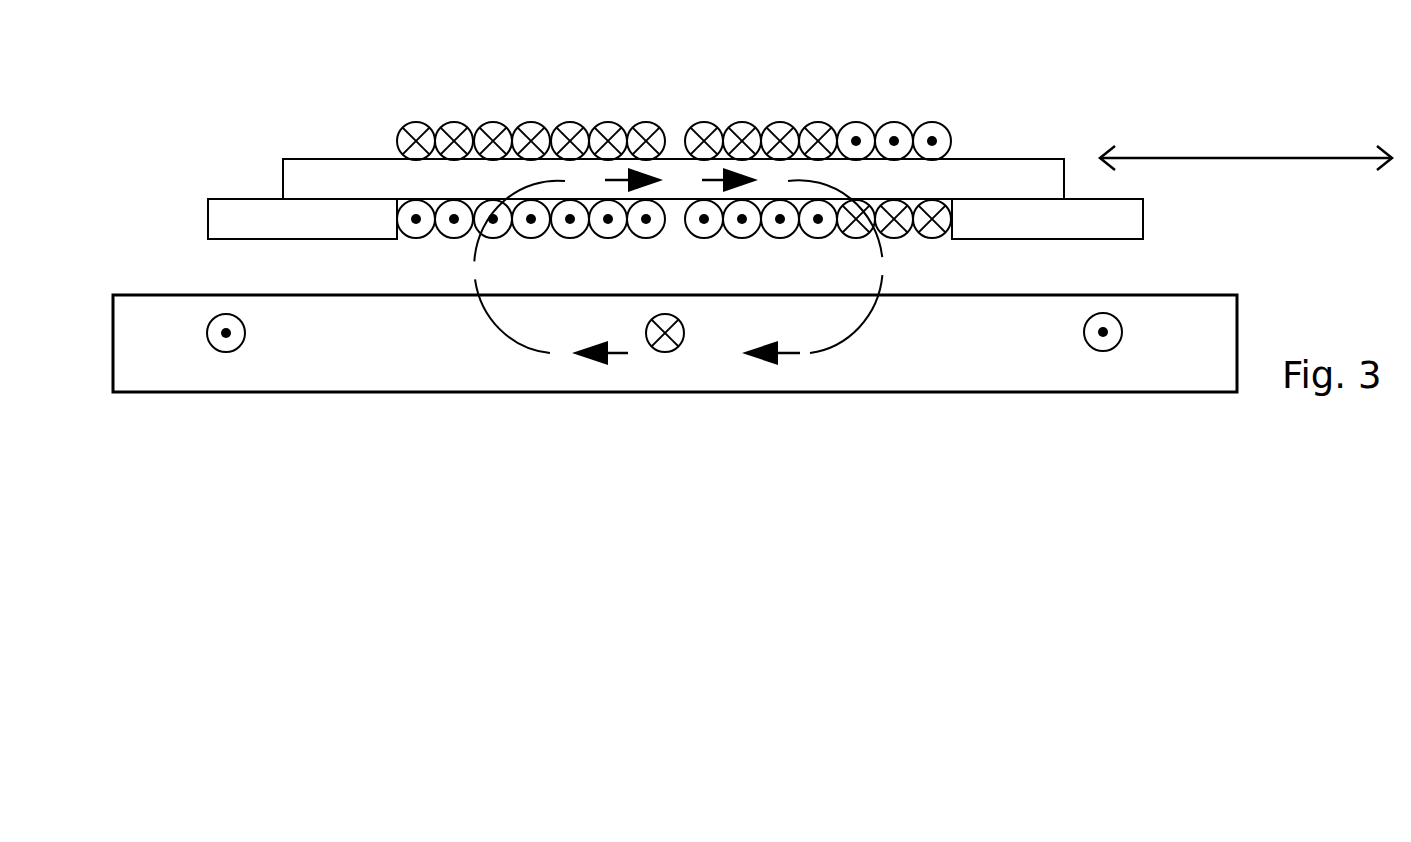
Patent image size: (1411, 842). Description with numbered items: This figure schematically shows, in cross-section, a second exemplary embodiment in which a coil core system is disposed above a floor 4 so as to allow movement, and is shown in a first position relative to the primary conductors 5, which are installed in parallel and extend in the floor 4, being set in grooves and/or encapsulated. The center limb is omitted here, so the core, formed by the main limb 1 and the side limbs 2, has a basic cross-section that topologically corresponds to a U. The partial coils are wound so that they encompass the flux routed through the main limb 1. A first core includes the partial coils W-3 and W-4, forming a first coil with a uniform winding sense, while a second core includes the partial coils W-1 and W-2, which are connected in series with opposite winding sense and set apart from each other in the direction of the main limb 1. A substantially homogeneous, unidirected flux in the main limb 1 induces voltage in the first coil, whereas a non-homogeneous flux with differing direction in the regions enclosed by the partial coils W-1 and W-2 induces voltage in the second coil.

The main limb 1 is at (1038, 183).
The side limb 2 is at (255, 215).
The floor 4 is at (1203, 360).
The primary conductor 5 is at (259, 377).
The partial coil W-1 is at (397, 109).
The partial coil W-2 is at (974, 108).
The partial coil W-3 is at (561, 107).
The partial coil W-4 is at (810, 107).